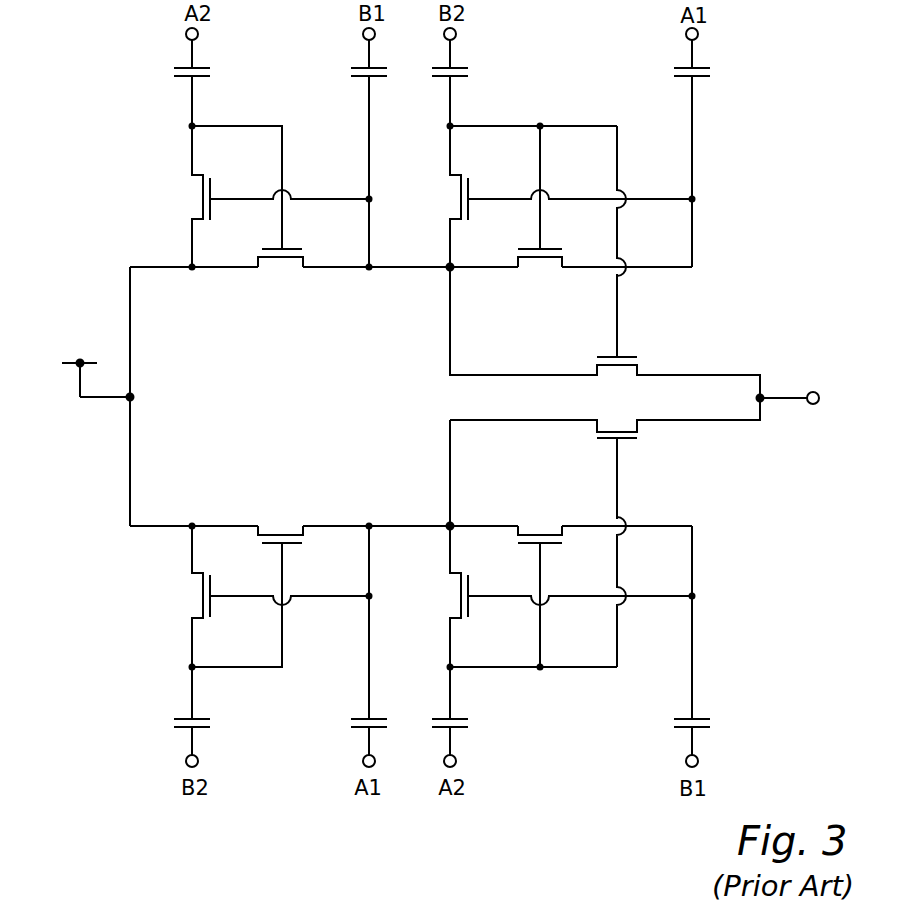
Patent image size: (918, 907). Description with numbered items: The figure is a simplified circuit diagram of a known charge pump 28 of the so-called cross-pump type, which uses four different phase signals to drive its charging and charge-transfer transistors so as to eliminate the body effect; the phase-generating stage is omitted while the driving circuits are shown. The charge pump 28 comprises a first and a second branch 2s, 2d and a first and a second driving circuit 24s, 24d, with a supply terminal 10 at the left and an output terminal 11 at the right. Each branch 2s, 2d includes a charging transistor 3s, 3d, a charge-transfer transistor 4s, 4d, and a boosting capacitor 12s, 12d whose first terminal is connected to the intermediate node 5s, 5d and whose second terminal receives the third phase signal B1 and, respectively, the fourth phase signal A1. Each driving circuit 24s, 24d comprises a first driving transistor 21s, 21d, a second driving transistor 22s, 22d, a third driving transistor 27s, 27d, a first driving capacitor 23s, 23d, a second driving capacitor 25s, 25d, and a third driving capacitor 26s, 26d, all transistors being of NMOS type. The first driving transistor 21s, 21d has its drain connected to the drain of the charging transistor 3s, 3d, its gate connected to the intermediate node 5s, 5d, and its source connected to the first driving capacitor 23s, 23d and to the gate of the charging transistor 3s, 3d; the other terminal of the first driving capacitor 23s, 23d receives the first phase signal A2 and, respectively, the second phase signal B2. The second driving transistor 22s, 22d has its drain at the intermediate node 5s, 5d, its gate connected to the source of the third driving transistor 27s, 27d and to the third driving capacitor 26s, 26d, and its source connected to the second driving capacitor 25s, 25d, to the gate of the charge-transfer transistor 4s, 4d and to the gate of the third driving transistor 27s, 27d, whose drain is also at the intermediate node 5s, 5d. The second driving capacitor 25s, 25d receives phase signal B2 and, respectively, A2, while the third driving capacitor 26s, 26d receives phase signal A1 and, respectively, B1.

The first branch 2s is at (323, 335).
The second branch 2d is at (288, 463).
The charging transistor 3s is at (278, 262).
The charging transistor 3d is at (280, 527).
The charge-transfer transistor 4s is at (608, 374).
The charge-transfer transistor 4d is at (623, 427).
The intermediate node 5s is at (447, 270).
The intermediate node 5d is at (448, 525).
The supply voltage terminal VDD 10 is at (72, 365).
The output terminal VOUT 11 is at (812, 391).
The boosting capacitor 12s is at (351, 68).
The boosting capacitor 12d is at (350, 720).
The first driving transistor 21s is at (201, 192).
The first driving transistor 21d is at (199, 600).
The second driving transistor 22s is at (457, 188).
The second driving transistor 22d is at (455, 595).
The first driving capacitor 23s is at (200, 72).
The first driving capacitor 23d is at (200, 723).
The first driving circuit 24s is at (745, 123).
The second driving circuit 24d is at (730, 623).
The second driving capacitor 25s is at (468, 72).
The second driving capacitor 25d is at (470, 722).
The third driving capacitor 26s is at (673, 70).
The third driving capacitor 26d is at (675, 722).
The third driving transistor 27s is at (535, 263).
The third driving transistor 27d is at (545, 530).
The charge pump 28 is at (755, 210).